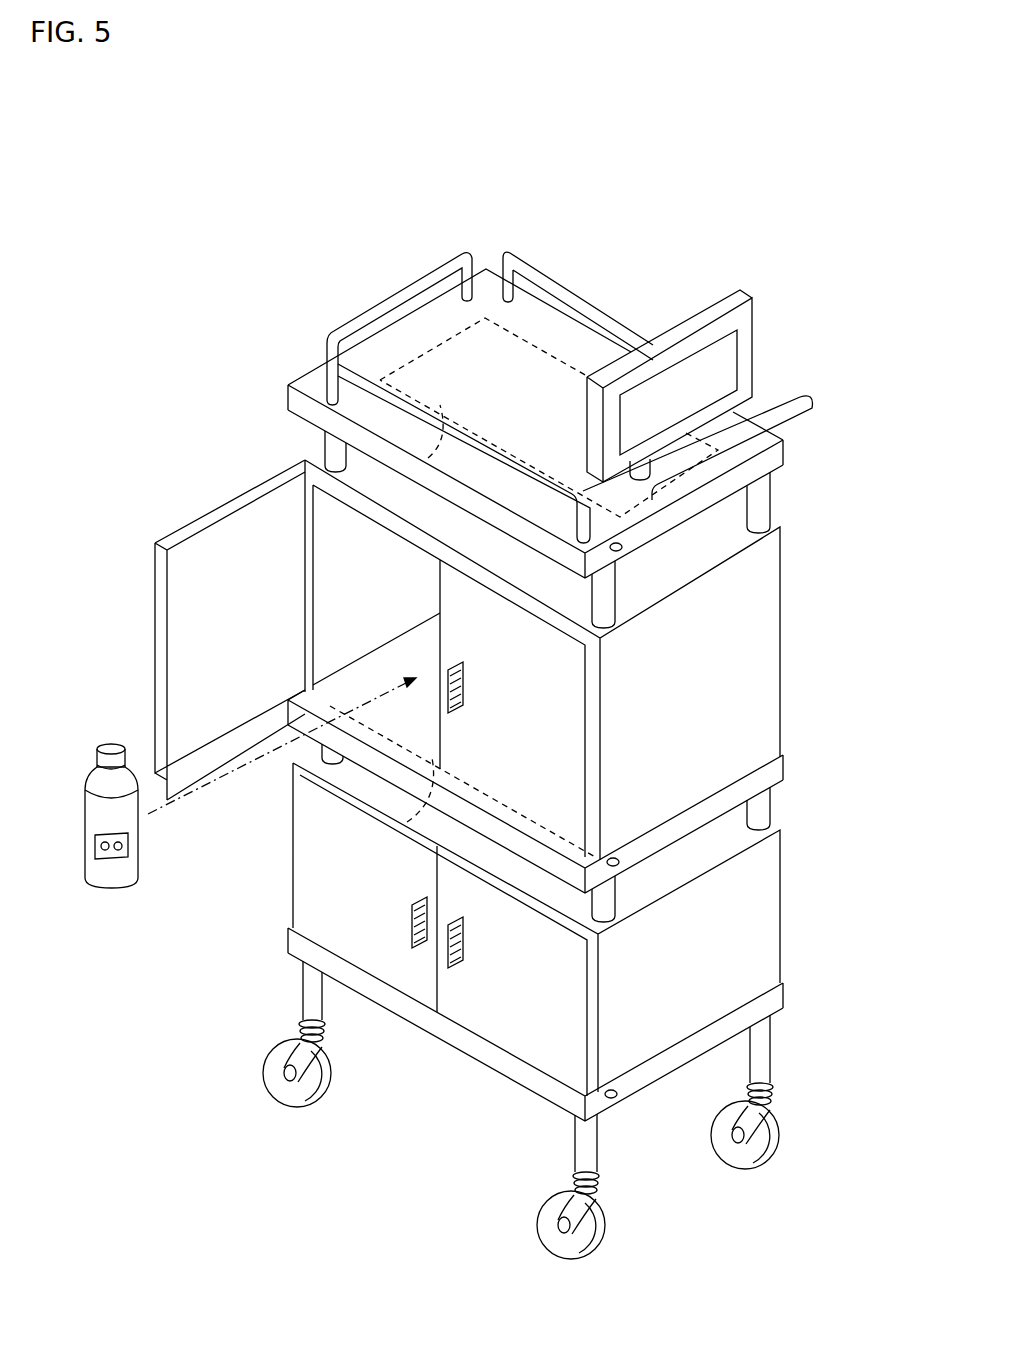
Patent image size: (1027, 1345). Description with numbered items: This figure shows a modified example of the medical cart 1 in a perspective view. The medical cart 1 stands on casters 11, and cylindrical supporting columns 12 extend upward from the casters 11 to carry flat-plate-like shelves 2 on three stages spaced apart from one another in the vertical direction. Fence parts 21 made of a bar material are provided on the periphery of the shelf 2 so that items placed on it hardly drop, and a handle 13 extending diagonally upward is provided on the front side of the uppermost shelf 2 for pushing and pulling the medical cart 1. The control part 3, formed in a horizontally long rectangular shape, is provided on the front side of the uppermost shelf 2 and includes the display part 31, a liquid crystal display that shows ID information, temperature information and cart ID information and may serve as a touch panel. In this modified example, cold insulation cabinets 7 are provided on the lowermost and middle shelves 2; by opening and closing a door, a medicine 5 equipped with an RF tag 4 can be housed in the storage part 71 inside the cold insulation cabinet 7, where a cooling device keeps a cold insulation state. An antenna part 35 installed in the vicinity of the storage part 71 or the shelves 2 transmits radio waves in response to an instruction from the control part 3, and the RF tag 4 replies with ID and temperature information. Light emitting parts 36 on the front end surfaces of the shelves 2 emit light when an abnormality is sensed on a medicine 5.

The medical cart 1 is at (297, 228).
The shelf 2 is at (372, 412).
The control part 3 is at (738, 295).
The RF tag 4 is at (131, 846).
The medicine 5 is at (93, 778).
The cold insulation cabinet 7 is at (750, 686).
The caster 11 is at (320, 1103).
The supporting column 12 is at (343, 764).
The handle 13 is at (806, 412).
The fence part 21 is at (328, 372).
The display part 31 is at (727, 370).
The antenna part 35 is at (428, 458).
The light emitting part 36 is at (621, 551).
The storage part 71 is at (373, 562).